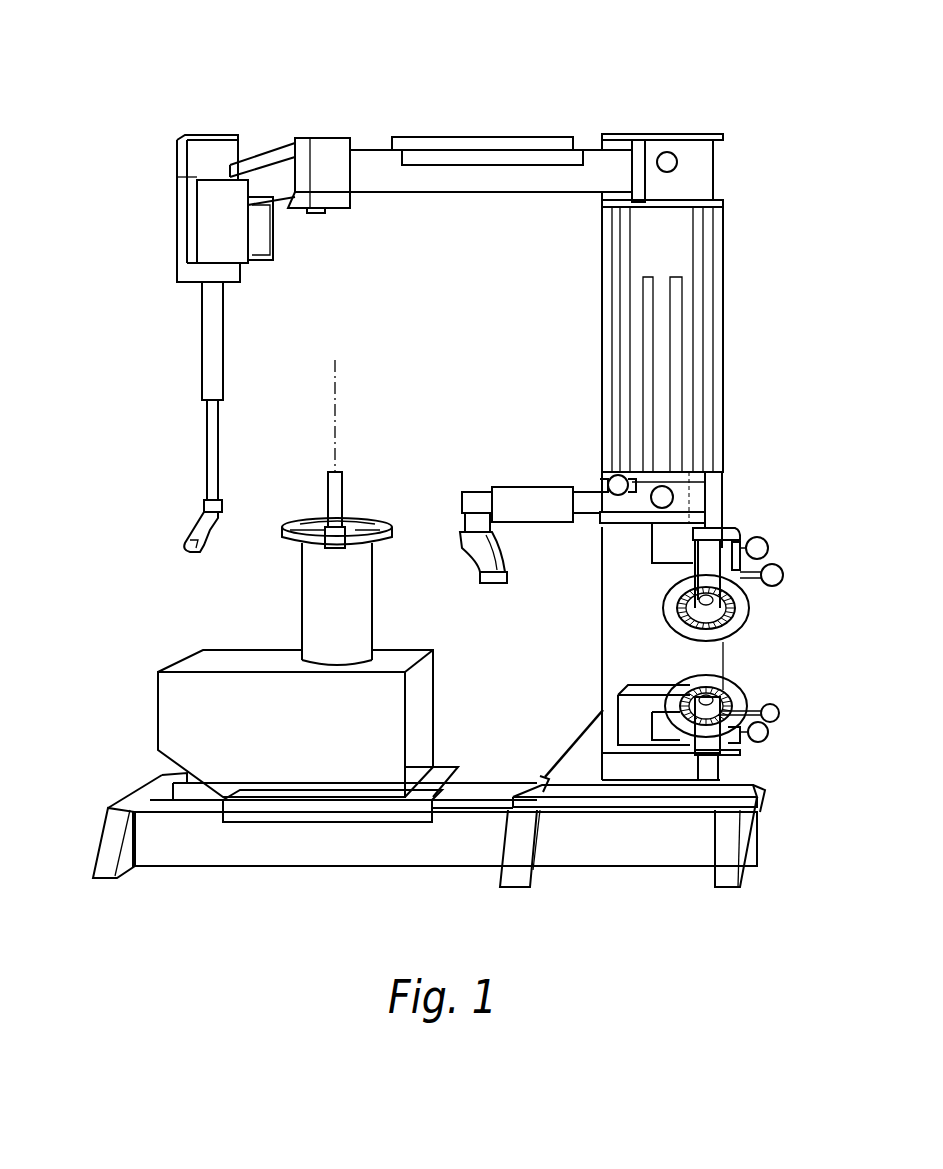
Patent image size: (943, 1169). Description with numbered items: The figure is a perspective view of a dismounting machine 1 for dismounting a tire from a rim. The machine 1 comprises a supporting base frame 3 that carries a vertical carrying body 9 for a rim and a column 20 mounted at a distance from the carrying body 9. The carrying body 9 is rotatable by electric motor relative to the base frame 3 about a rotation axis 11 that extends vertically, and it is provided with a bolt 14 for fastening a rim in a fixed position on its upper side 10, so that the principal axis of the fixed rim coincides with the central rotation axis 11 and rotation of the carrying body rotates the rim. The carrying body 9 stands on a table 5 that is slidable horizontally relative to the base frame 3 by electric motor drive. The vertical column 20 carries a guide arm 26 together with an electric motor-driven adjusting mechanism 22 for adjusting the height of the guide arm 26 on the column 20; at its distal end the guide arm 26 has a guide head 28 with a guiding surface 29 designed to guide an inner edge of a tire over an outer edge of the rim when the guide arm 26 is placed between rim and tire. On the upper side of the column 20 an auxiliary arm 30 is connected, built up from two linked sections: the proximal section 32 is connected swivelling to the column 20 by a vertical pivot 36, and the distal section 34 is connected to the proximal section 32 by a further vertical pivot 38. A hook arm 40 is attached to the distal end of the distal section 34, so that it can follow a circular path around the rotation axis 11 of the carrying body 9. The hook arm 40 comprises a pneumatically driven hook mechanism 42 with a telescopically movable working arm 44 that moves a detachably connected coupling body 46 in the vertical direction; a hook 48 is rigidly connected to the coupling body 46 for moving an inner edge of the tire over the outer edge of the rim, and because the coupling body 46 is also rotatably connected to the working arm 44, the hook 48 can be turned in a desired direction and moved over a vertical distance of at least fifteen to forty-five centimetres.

The dismounting machine 1 is at (92, 85).
The supporting base frame 3 is at (323, 843).
The table 5 is at (165, 710).
The carrying body 9 is at (306, 598).
The upper side of the carrying body 10 is at (377, 500).
The rotation axis 11 is at (334, 408).
The bolt 14 is at (330, 493).
The column 20 is at (755, 298).
The adjusting mechanism 22 is at (695, 502).
The guide arm 26 is at (598, 492).
The guide head 28 is at (492, 584).
The guiding surface 29 is at (508, 553).
The auxiliary arm 30 is at (430, 108).
The proximal section 32 is at (470, 180).
The distal section 34 is at (283, 165).
The vertical pivot 36 is at (619, 132).
The vertical pivot 38 is at (316, 217).
The hook arm 40 is at (146, 294).
The hook mechanism 42 is at (172, 197).
The working arm 44 is at (207, 357).
The coupling body 46 is at (210, 445).
The hook 48 is at (192, 544).